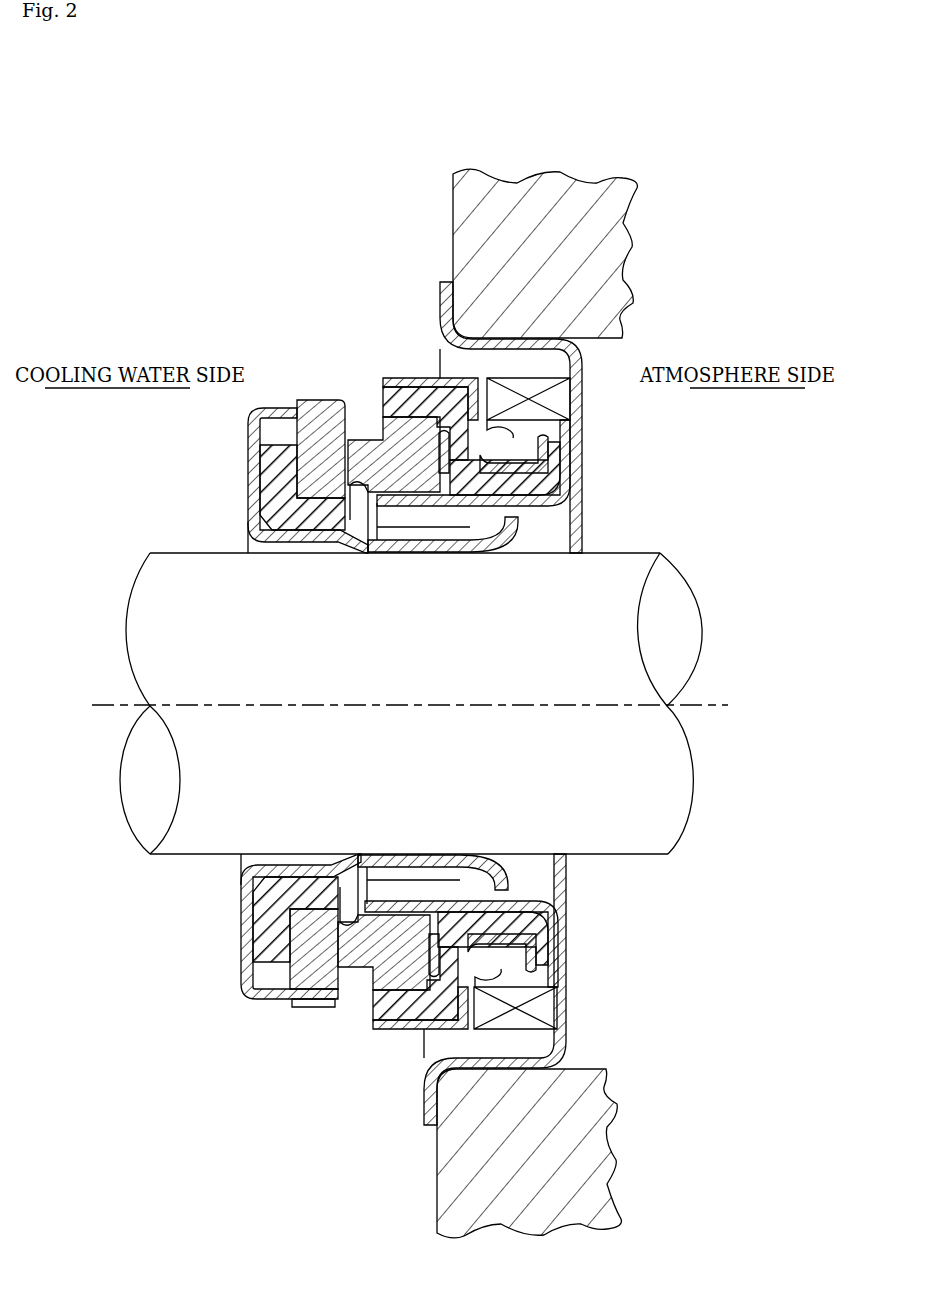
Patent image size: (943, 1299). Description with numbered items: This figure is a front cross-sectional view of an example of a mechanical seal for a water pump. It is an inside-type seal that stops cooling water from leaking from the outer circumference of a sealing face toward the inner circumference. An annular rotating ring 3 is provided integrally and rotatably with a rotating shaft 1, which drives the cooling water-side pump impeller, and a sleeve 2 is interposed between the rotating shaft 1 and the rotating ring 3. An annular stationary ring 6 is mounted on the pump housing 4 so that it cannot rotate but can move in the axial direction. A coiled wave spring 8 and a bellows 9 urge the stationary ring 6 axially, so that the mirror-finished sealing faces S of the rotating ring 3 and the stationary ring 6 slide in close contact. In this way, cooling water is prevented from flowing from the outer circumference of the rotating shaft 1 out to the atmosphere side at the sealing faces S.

The rotating shaft 1 is at (302, 667).
The sleeve 2 is at (250, 474).
The rotating ring 3 is at (292, 407).
The pump housing 4 is at (530, 200).
The stationary ring 6 is at (395, 437).
The coiled wave spring 8 is at (560, 404).
The bellows 9 is at (443, 403).
The sealing faces S is at (356, 492).